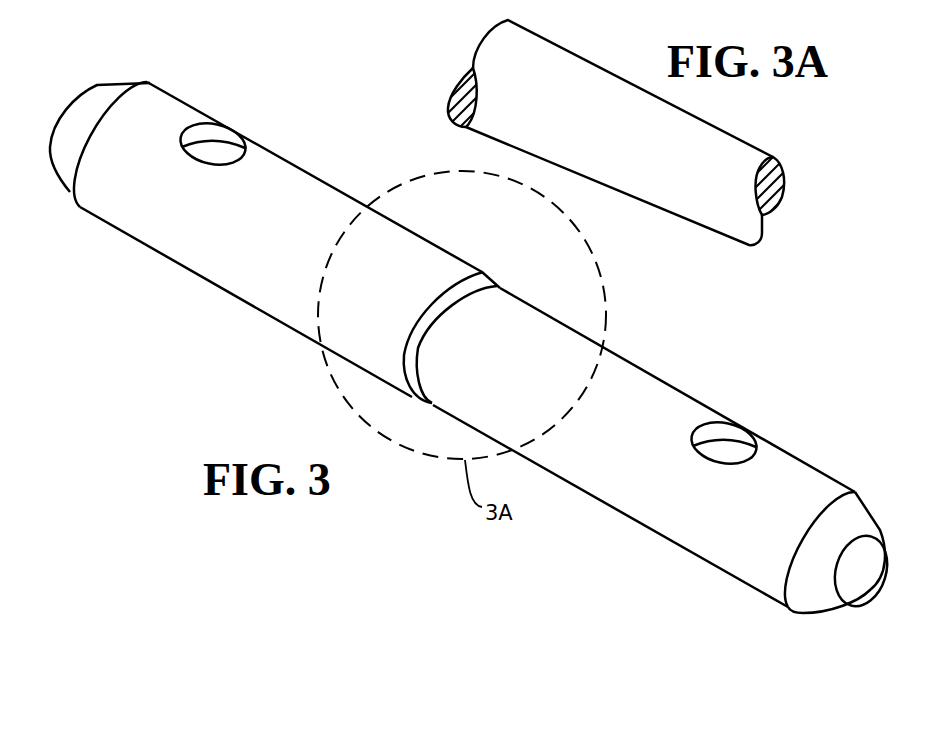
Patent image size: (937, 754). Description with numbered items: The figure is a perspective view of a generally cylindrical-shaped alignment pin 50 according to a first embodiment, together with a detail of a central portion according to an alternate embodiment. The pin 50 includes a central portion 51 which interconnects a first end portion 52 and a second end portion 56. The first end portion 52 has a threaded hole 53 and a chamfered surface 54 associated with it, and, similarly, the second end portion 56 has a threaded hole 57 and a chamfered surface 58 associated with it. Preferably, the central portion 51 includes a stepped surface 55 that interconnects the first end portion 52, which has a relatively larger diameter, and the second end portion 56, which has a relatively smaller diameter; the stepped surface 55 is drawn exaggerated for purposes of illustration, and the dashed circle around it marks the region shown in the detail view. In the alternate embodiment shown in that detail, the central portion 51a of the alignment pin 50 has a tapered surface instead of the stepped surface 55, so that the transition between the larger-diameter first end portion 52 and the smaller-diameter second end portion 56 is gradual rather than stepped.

In FIG. 3, the pin 50 is at (190, 362).
In FIG. 3, the central portion 51 is at (383, 212).
In FIG. 3A, the central portion 51a is at (685, 220).
In FIG. 3, the first end portion 52 is at (148, 108).
In FIG. 3, the threaded hole 53 is at (215, 137).
In FIG. 3, the chamfered surface 54 is at (88, 95).
In FIG. 3, the stepped surface 55 is at (485, 278).
In FIG. 3, the second end portion 56 is at (810, 485).
In FIG. 3, the threaded hole 57 is at (730, 433).
In FIG. 3, the chamfered surface 58 is at (815, 592).